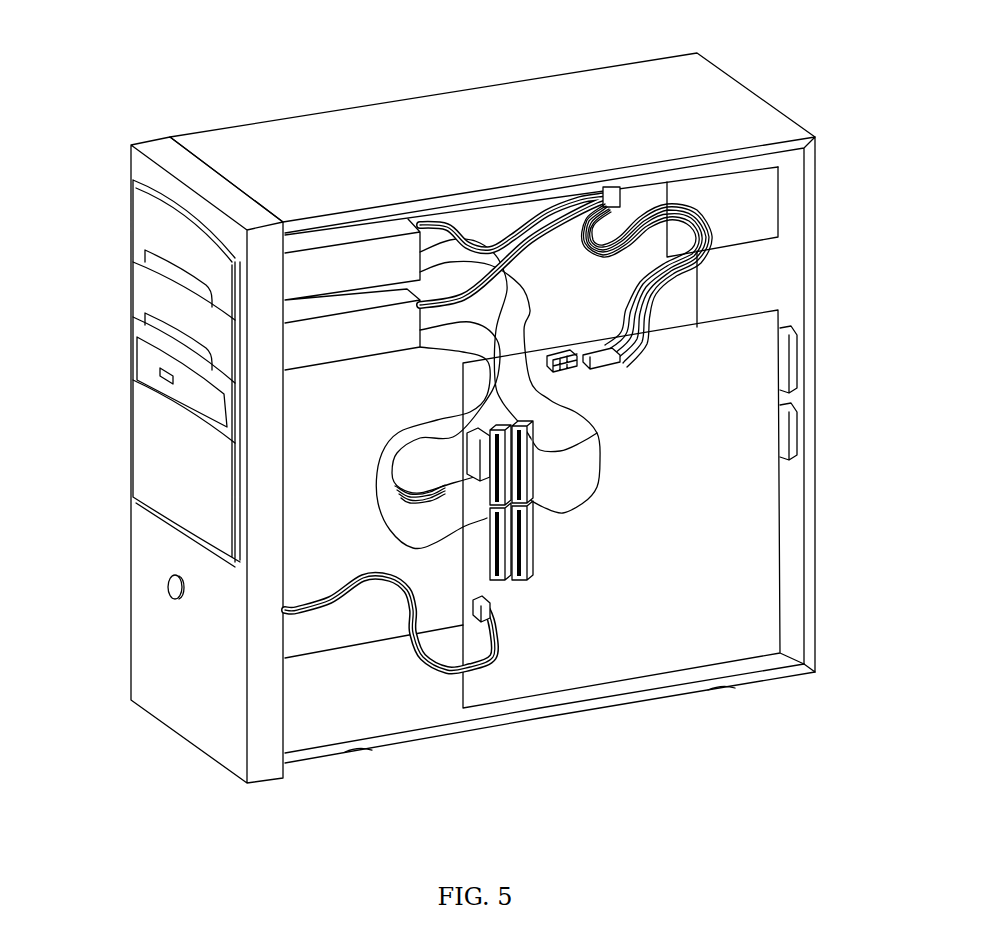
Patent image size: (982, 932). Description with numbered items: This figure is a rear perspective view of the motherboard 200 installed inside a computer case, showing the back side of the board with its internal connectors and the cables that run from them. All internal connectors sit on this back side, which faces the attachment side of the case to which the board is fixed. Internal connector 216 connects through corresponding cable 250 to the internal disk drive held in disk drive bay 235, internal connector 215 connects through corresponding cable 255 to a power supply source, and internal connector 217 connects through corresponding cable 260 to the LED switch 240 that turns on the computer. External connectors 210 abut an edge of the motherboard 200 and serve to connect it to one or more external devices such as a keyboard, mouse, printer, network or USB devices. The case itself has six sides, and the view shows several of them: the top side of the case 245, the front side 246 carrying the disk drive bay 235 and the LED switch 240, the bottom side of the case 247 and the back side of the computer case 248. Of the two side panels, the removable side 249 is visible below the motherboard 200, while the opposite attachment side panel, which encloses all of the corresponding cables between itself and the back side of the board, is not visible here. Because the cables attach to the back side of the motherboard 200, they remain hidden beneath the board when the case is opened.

The motherboard 200 is at (745, 535).
The external connectors 210 is at (790, 358).
The internal connector 215 is at (608, 348).
The internal connector 216 is at (481, 430).
The internal connector 217 is at (482, 625).
The disk drive bay 235 is at (148, 240).
The LED switch 240 is at (165, 585).
The top side of the case 245 is at (327, 130).
The front side of the case 246 is at (140, 546).
The bottom side of the case 247 is at (427, 742).
The back side of the computer case 248 is at (810, 618).
The removable side 249 is at (319, 632).
The corresponding cable 250 is at (527, 290).
The corresponding cable 255 is at (703, 232).
The corresponding cable 260 is at (355, 593).